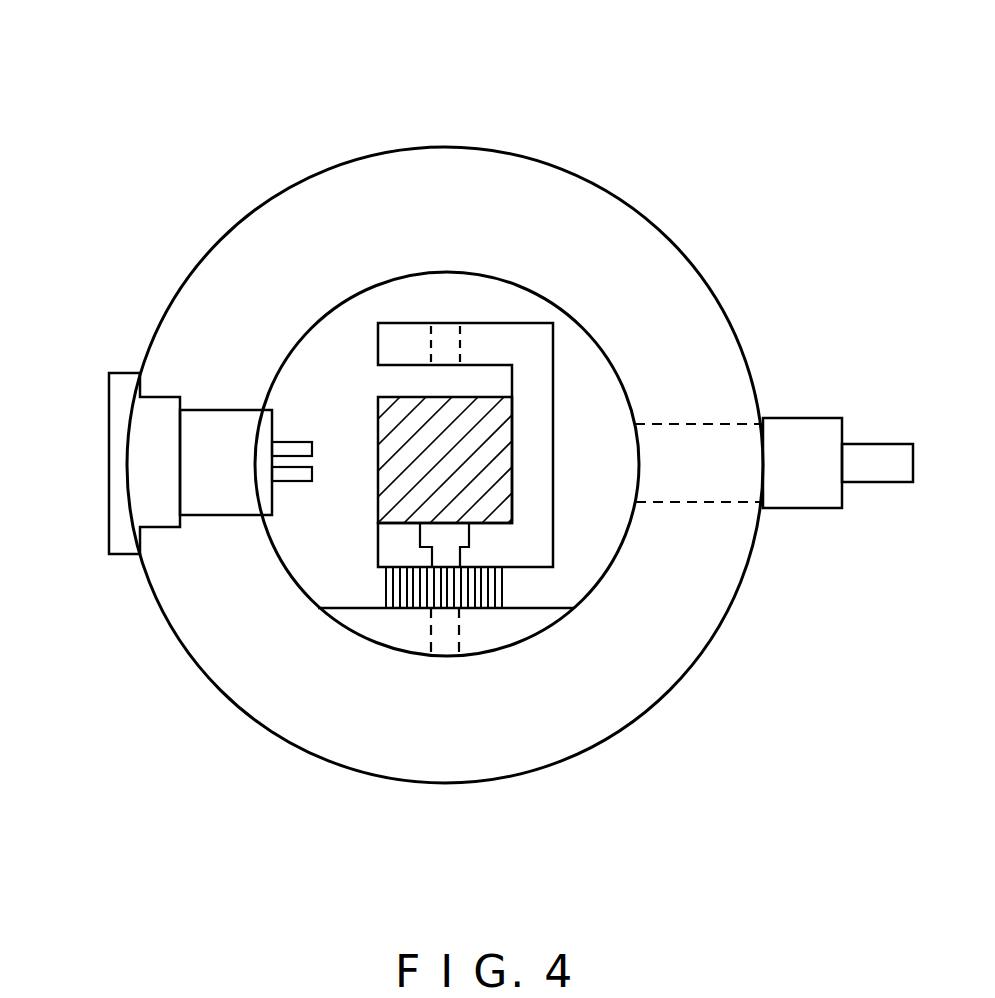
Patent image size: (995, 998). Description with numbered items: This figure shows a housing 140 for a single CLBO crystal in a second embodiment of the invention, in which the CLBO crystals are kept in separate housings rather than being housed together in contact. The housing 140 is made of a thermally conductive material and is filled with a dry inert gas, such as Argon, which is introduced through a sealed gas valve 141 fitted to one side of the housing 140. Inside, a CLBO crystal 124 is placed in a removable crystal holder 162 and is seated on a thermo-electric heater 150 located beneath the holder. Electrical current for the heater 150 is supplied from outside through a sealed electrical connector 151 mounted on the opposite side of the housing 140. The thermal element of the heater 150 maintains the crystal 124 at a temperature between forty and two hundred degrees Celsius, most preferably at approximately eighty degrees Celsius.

The housing 140 is at (448, 100).
The CLBO crystal 124 is at (377, 420).
The removable crystal holder 162 is at (540, 322).
The sealed electrical connector 151 is at (108, 392).
The sealed gas valve 141 is at (795, 417).
The thermo-electric heater 150 is at (500, 583).